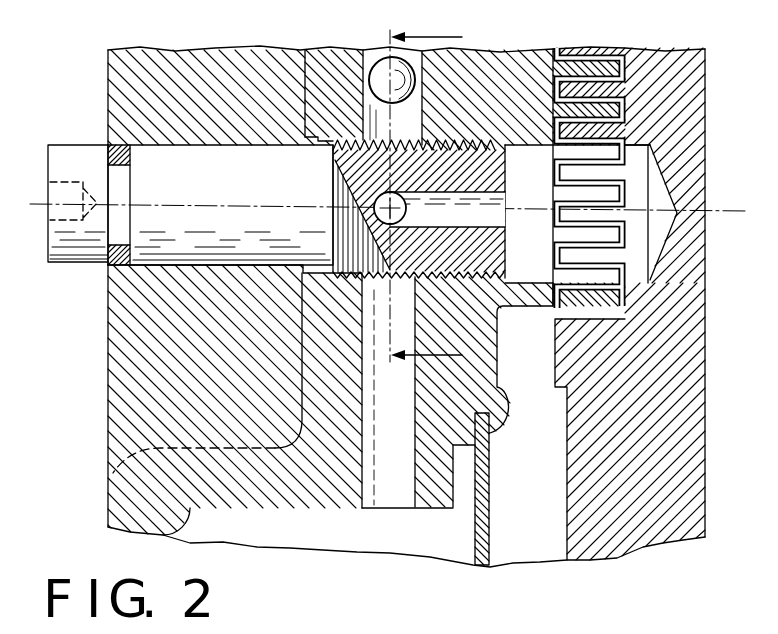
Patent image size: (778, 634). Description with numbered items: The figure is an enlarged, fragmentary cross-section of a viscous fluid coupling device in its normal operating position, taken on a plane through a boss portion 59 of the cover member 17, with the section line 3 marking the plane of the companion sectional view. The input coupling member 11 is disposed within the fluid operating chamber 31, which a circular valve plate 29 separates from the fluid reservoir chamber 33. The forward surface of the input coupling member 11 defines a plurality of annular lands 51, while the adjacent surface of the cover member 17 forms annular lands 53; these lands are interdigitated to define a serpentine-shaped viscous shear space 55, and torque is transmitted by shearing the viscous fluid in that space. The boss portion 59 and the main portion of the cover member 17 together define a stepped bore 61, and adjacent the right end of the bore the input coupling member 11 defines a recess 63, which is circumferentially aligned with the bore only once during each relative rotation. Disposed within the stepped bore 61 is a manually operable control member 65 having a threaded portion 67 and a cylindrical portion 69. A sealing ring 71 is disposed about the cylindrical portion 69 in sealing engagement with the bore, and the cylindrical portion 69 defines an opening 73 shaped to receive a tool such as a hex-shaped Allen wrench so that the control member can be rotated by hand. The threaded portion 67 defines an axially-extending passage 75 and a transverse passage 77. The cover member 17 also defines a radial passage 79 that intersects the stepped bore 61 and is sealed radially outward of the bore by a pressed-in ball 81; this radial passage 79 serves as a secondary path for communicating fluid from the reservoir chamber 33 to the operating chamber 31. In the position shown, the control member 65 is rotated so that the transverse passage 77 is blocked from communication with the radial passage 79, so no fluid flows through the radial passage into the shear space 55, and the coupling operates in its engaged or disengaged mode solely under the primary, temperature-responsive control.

The section line 3- 3 is at (435, 198).
The input coupling member 11 is at (716, 166).
The cover member 17 is at (302, 70).
The circular valve plate 29 is at (483, 525).
The fluid operating chamber 31 is at (519, 484).
The fluid reservoir chamber 33 is at (268, 522).
The annular lands 51 is at (540, 100).
The annular lands 53 is at (610, 322).
The serpentine-shaped viscous shear space 55 is at (622, 72).
The boss portion 59 is at (130, 405).
The stepped bore 61 is at (267, 149).
The recess 63 is at (636, 260).
The manually operable control member 65 is at (78, 136).
The threaded portion 67 is at (443, 255).
The cylindrical portion 69 is at (167, 255).
The sealing ring 71 is at (122, 143).
The opening 73 is at (50, 205).
The axially-extending passage 75 is at (453, 203).
The transverse passage 77 is at (380, 194).
The radial passage 79 is at (386, 478).
The pressed-in ball 81 is at (371, 76).